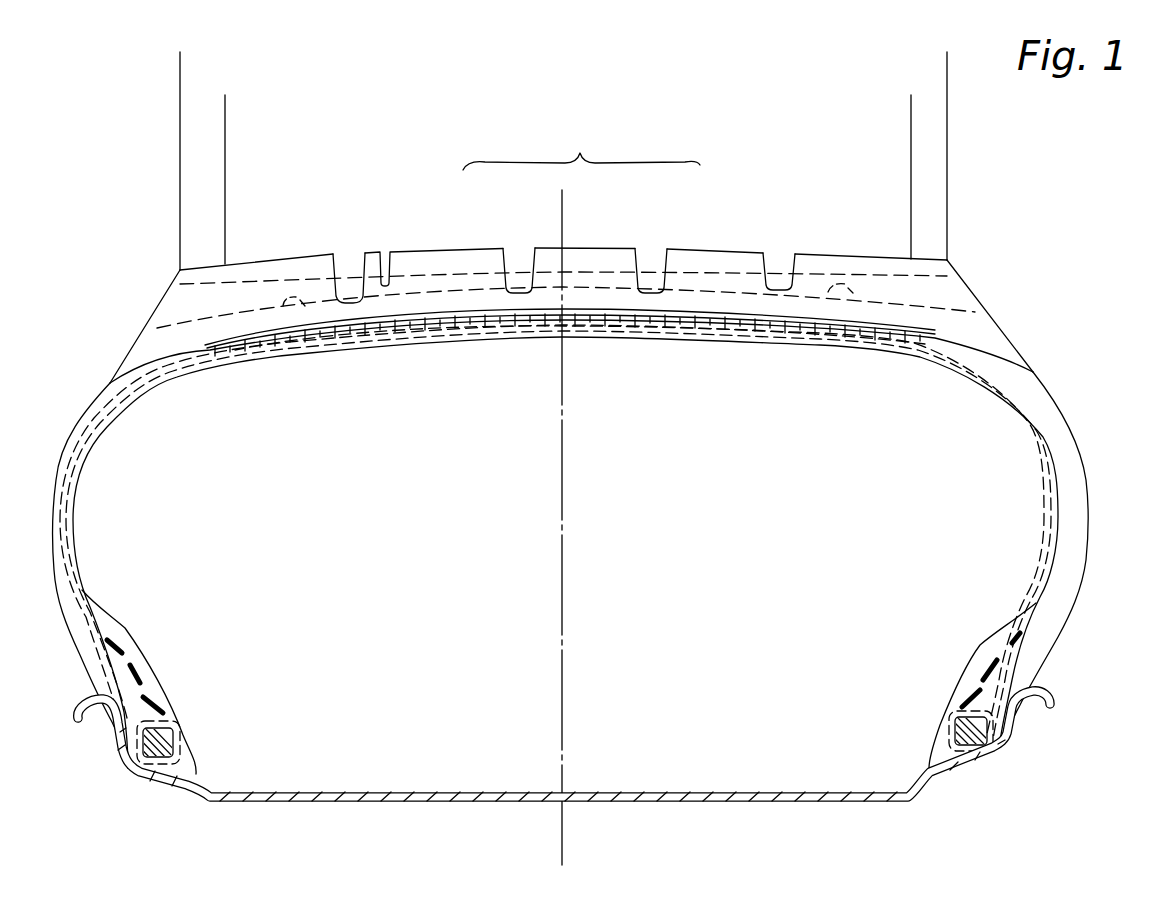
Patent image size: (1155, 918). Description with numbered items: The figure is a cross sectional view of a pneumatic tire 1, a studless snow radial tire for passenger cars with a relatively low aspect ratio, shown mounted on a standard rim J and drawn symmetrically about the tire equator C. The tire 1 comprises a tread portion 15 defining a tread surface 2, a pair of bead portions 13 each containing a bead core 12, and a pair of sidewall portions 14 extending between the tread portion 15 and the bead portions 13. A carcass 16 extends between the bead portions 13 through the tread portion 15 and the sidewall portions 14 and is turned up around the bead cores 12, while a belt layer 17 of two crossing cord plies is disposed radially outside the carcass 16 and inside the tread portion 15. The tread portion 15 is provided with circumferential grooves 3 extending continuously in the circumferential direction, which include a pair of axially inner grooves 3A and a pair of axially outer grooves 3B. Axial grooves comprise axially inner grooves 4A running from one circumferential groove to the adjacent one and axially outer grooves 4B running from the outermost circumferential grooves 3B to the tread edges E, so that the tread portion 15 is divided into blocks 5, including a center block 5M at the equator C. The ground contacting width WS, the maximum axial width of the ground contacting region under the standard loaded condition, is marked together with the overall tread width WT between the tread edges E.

The pneumatic tire 1 is at (960, 222).
The tread surface 2 is at (290, 258).
The circumferential grooves 3 is at (581, 145).
The axially inner grooves 3A is at (515, 265).
The axially outer grooves 3B is at (347, 272).
The axially inner grooves 4A is at (442, 295).
The axially outer grooves 4B is at (278, 312).
The blocks 5 is at (310, 270).
The center rib 5M is at (607, 272).
The bead core 12 is at (168, 762).
The bead portions 13 is at (195, 688).
The sidewall portions 14 is at (135, 578).
The tread portion 15 is at (840, 237).
The carcass 16 is at (137, 417).
The belt layer 17 is at (367, 327).
The tread edges E is at (180, 270).
The tire equator C is at (562, 815).
The standard rim J is at (776, 800).
The tread width WT is at (947, 62).
The ground contacting width WS is at (911, 102).